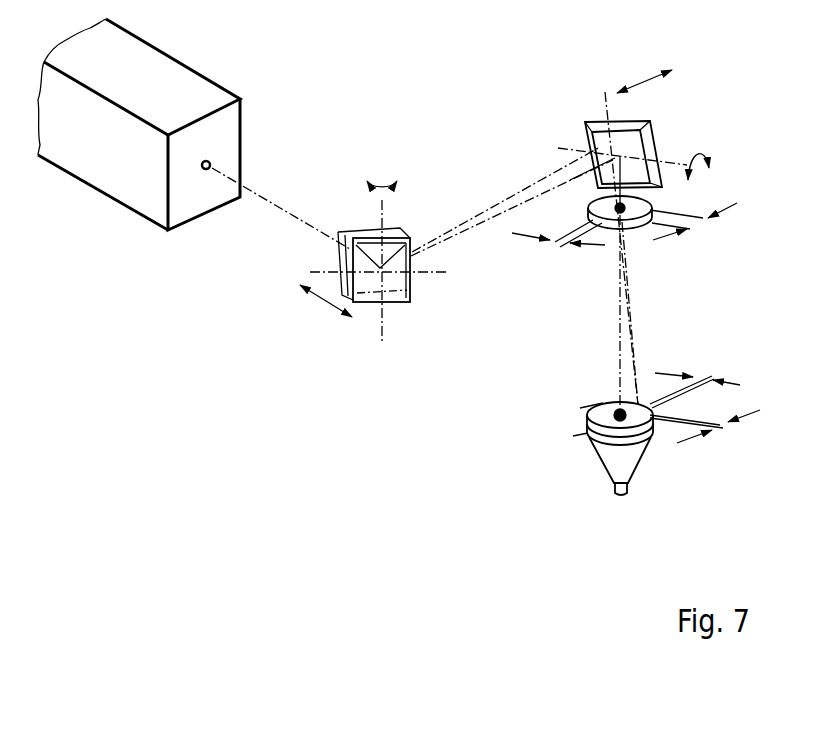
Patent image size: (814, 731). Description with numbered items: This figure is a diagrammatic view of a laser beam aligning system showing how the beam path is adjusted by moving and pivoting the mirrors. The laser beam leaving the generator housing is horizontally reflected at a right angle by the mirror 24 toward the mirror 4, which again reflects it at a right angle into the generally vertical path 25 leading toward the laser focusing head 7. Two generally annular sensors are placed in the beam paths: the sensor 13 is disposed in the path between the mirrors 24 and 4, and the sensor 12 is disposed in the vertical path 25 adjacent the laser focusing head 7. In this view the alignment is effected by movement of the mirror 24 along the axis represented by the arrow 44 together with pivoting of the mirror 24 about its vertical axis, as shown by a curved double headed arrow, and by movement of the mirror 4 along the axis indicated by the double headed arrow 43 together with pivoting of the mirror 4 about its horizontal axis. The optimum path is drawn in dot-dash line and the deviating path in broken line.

The mirror 4 is at (630, 155).
The laser focusing head 7 is at (610, 470).
The sensor 12 is at (603, 405).
The sensor 13 is at (647, 208).
The mirror 24 is at (393, 281).
The generally vertical path 25 is at (633, 318).
The double headed arrow 43 is at (643, 82).
The arrow 44 is at (325, 302).